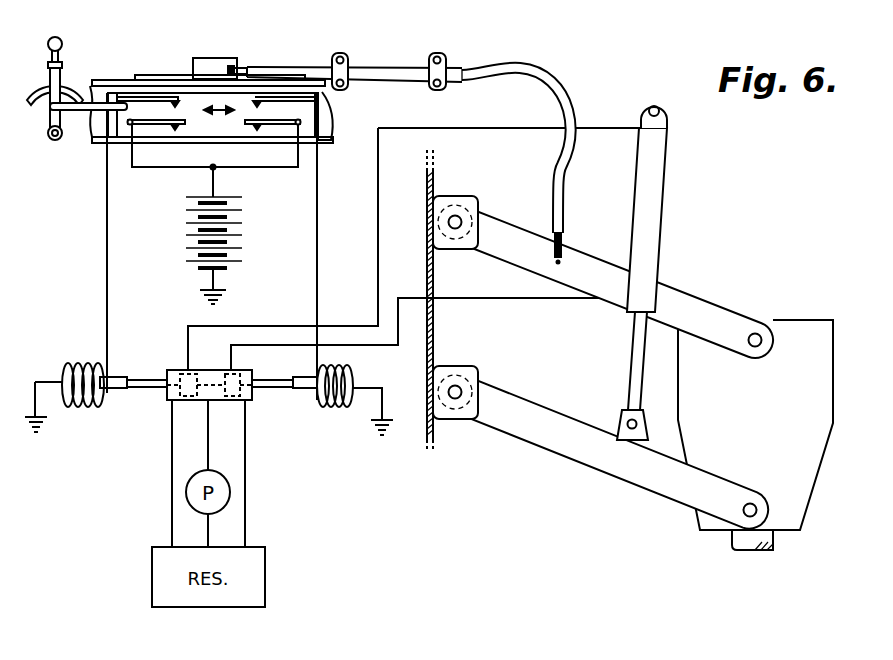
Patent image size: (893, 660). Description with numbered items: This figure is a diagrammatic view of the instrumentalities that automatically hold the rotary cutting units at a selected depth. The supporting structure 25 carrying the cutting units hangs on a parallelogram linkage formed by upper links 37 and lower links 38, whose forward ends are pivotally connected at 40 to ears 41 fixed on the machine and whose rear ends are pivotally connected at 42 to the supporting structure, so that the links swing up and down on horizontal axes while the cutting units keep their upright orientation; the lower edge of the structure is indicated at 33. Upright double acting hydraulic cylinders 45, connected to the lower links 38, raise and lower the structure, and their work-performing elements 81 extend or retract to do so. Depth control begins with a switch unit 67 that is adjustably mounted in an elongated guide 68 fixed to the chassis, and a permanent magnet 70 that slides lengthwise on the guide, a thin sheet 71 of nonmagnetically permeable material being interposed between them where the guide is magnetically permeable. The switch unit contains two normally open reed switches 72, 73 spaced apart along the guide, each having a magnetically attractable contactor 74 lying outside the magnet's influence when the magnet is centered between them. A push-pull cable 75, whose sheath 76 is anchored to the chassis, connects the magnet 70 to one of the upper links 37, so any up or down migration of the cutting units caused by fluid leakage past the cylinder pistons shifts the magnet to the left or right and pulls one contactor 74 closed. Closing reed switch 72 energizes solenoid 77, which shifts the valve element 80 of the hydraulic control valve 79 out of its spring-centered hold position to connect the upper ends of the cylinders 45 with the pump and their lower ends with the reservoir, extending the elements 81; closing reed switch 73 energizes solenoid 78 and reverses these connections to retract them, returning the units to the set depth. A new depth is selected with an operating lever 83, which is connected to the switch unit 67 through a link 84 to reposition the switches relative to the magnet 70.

The supporting structure 25 is at (807, 320).
The bucket cutting edge block 33 is at (775, 538).
The upper links 37 is at (675, 300).
The lower links 38 is at (598, 462).
The pivotal connections 40 is at (458, 219).
The ears 41 is at (450, 250).
The pivotal connections 42 is at (755, 334).
The hydraulic cylinders 45 is at (653, 186).
The switch unit 67 is at (303, 110).
The guide 68 is at (328, 131).
The permanent magnet 70 is at (211, 58).
The thin sheet 71 is at (145, 75).
The reed switch 72 is at (157, 108).
The reed switch 73 is at (267, 110).
The contactors 74 is at (162, 138).
The push-pull cable 75 is at (240, 68).
The sheath 76 is at (549, 78).
The solenoid 77 is at (76, 408).
The solenoid 78 is at (342, 410).
The hydraulic control valve 79 is at (176, 370).
The valve element 80 is at (184, 405).
The work-performing elements 81 is at (630, 351).
The operating lever 83 is at (63, 48).
The link 84 is at (80, 112).